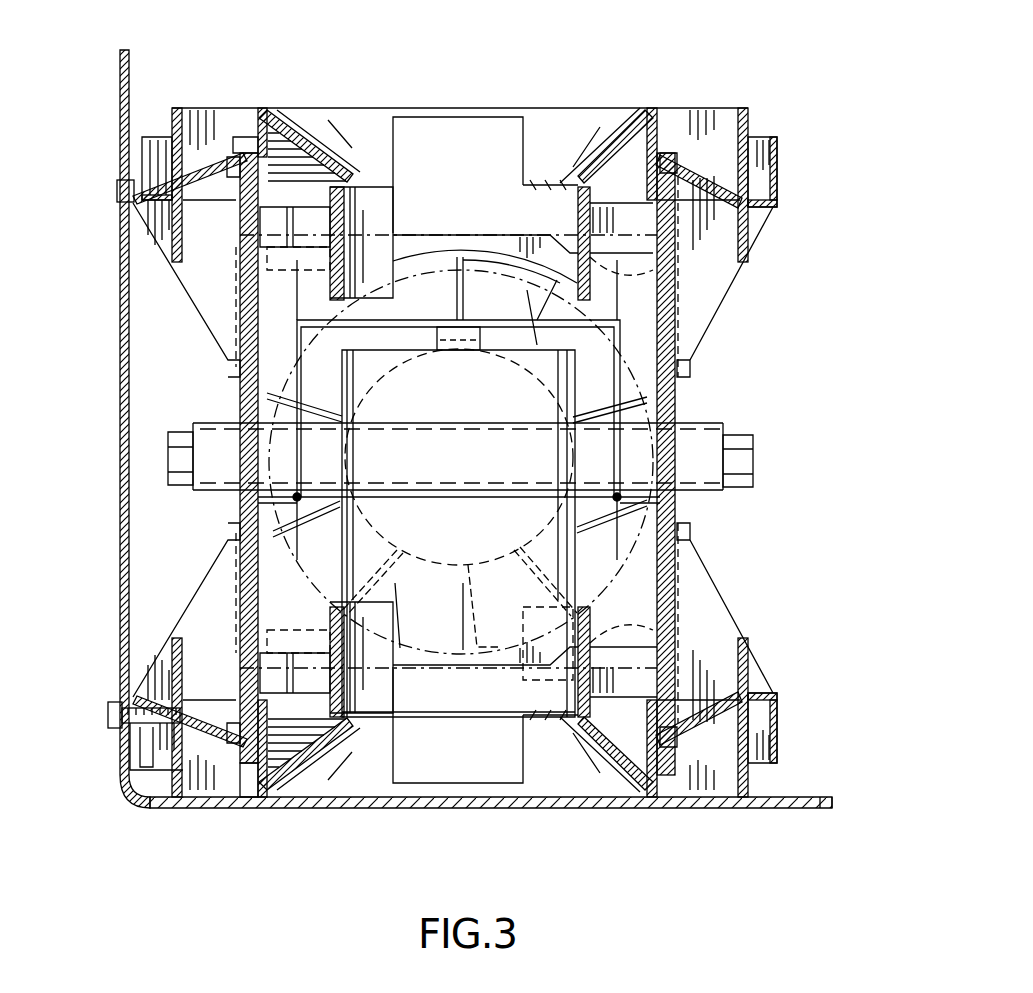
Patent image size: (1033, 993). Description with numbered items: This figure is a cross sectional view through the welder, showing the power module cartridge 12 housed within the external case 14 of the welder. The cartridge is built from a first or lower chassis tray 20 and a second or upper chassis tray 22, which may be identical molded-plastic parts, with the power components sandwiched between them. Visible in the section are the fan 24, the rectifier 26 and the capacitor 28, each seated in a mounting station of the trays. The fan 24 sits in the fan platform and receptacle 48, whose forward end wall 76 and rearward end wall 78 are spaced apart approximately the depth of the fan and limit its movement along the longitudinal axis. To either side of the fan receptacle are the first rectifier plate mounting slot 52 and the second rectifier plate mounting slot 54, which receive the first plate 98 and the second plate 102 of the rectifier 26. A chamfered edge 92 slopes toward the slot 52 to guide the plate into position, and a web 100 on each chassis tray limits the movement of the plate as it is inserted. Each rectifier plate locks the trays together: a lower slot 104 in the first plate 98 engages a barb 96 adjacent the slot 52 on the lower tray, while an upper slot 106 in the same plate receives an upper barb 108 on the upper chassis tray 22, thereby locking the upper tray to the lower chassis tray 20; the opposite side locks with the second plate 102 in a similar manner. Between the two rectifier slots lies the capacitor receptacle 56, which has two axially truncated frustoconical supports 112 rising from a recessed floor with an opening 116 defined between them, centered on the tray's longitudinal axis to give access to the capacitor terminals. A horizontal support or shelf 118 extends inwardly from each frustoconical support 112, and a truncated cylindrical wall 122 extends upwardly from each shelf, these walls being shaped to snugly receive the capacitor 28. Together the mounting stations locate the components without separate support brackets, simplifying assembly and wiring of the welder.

The power module cartridge 12 is at (656, 72).
The external case 14 is at (124, 358).
The lower chassis tray 20 is at (646, 800).
The upper chassis tray 22 is at (272, 104).
The fan 24 is at (640, 410).
The rectifier 26 is at (240, 509).
The capacitor 28 is at (585, 522).
The fan platform and receptacle 48 is at (452, 235).
The first rectifier plate mounting slot 52 is at (200, 775).
The second rectifier plate mounting slot 54 is at (757, 793).
The capacitor receptacle 56 is at (377, 268).
The forward end wall 76 is at (565, 240).
The rearward end wall 78 is at (267, 640).
The chamfered edge 92 is at (130, 180).
The barb 96 is at (240, 728).
The first plate 98 is at (262, 397).
The web 100 is at (255, 118).
The second plate 102 is at (677, 508).
The lower slot 104 is at (218, 780).
The upper slot 106 is at (233, 177).
The upper barb 108 is at (243, 167).
The axially truncated frustoconical support 112 is at (337, 127).
The opening 116 is at (490, 240).
The horizontal support 118 is at (368, 185).
The truncated cylindrical wall 122 is at (332, 228).